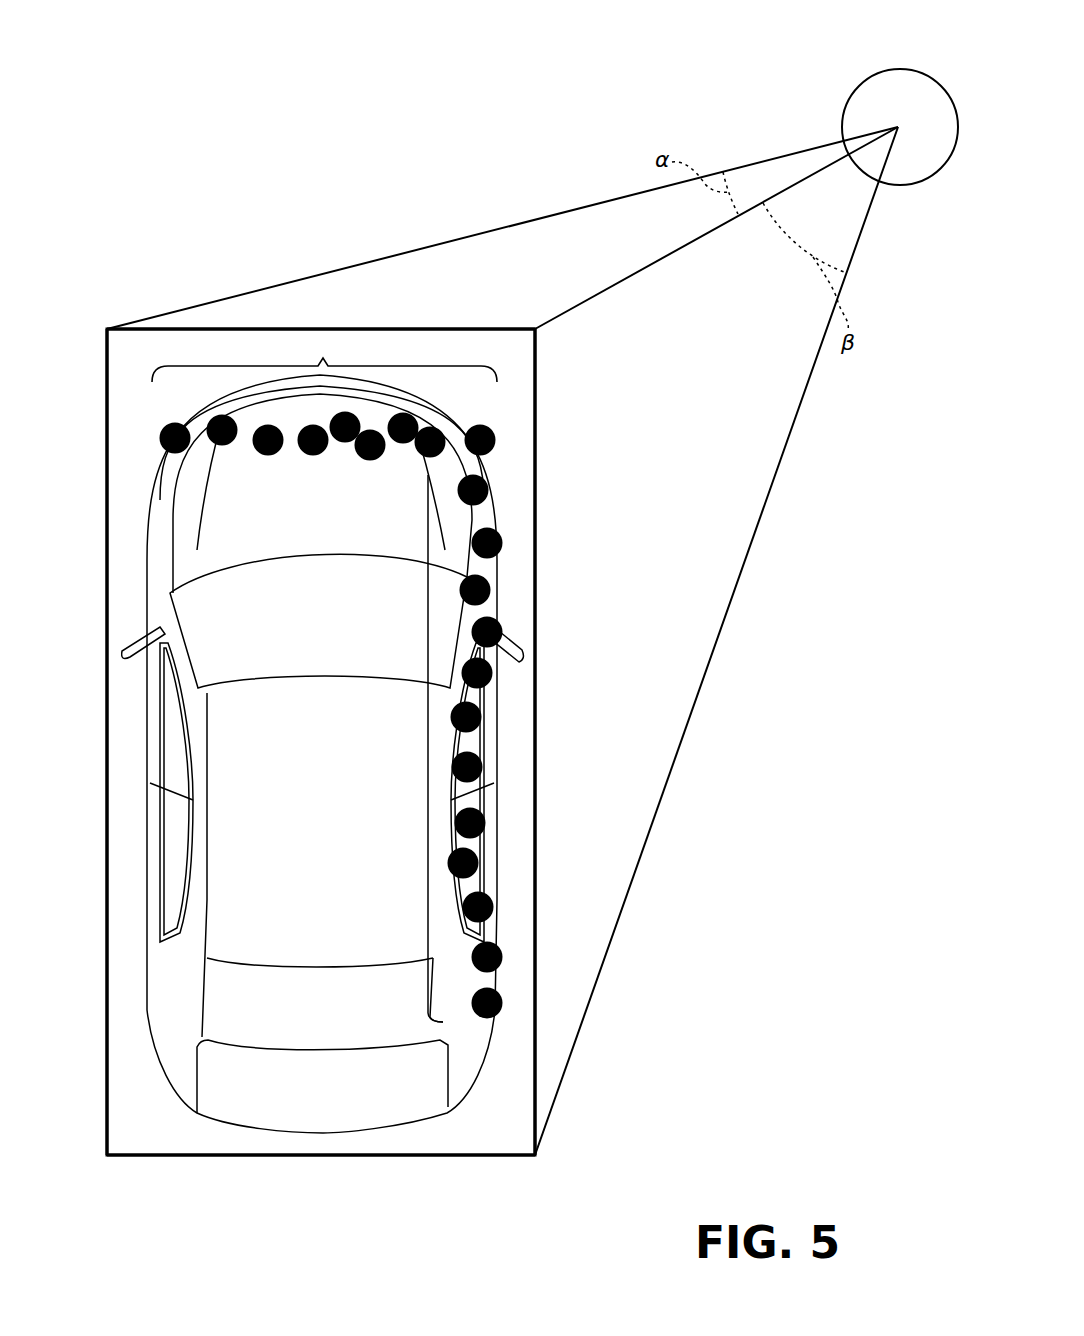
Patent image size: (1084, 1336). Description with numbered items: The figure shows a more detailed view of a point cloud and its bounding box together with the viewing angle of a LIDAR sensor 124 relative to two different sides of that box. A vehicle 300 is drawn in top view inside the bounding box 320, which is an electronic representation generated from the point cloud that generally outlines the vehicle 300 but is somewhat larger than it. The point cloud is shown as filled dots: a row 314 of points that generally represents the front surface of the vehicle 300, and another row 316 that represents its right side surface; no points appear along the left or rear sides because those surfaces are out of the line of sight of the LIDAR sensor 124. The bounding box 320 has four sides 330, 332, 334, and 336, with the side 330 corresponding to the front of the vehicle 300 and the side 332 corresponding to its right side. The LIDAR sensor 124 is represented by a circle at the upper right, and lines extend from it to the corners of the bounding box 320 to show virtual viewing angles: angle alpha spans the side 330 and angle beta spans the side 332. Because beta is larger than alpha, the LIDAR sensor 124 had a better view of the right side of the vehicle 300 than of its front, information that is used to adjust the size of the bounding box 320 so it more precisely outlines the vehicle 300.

The LIDAR sensor 124 is at (885, 92).
The vehicle 300 is at (275, 1133).
The row of points 314 is at (324, 396).
The row of points 316 is at (428, 736).
The bounding box 320 is at (107, 1123).
The side of the bounding box 330 is at (415, 328).
The side of the bounding box 332 is at (538, 493).
The side of the bounding box 334 is at (457, 1157).
The side of the bounding box 336 is at (107, 852).